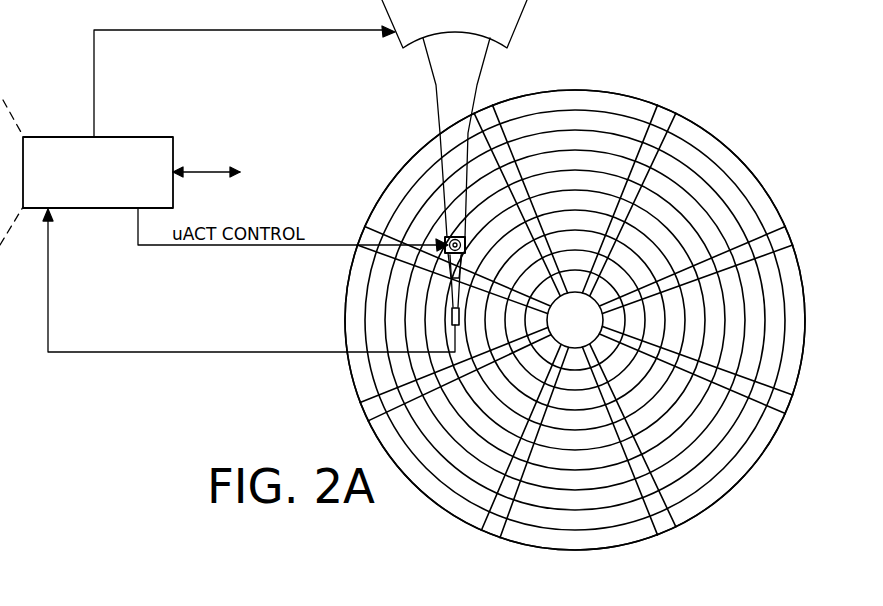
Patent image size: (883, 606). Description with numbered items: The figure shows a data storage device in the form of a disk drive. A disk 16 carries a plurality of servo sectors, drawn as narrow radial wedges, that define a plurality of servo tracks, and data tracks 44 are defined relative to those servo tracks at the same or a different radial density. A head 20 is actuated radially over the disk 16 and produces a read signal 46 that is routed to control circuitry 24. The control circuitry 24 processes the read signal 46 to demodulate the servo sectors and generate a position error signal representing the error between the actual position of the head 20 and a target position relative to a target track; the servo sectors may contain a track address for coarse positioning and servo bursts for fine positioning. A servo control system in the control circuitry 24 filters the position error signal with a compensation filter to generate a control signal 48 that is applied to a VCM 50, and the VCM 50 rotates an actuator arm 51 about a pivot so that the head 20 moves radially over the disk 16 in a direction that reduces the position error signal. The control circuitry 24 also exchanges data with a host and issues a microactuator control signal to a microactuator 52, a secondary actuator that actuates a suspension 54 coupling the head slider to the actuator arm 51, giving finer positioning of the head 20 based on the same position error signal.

The disk 16 is at (735, 144).
The head 20 is at (450, 315).
The control circuitry 24 is at (138, 136).
The data tracks 44 is at (565, 118).
The read signal 46 is at (190, 353).
The control signal 48 is at (95, 58).
The VCM 50 is at (399, 46).
The actuator arm 51 is at (436, 122).
The microactuator 52 is at (467, 244).
The suspension 54 is at (463, 285).